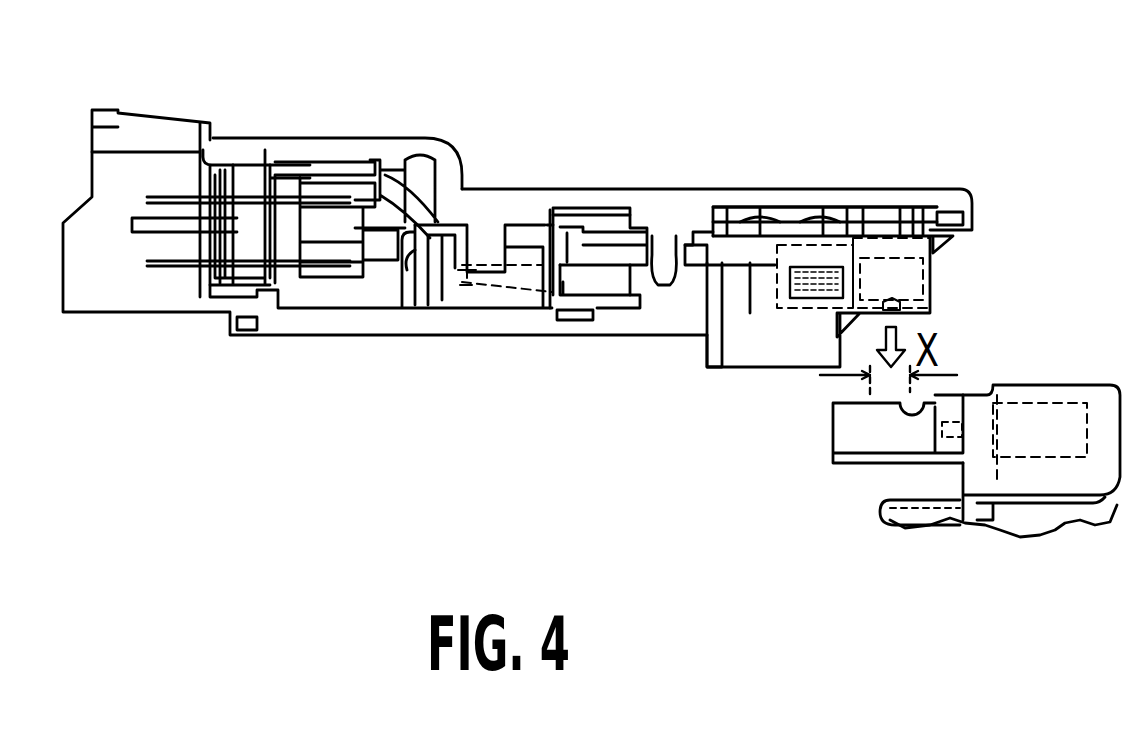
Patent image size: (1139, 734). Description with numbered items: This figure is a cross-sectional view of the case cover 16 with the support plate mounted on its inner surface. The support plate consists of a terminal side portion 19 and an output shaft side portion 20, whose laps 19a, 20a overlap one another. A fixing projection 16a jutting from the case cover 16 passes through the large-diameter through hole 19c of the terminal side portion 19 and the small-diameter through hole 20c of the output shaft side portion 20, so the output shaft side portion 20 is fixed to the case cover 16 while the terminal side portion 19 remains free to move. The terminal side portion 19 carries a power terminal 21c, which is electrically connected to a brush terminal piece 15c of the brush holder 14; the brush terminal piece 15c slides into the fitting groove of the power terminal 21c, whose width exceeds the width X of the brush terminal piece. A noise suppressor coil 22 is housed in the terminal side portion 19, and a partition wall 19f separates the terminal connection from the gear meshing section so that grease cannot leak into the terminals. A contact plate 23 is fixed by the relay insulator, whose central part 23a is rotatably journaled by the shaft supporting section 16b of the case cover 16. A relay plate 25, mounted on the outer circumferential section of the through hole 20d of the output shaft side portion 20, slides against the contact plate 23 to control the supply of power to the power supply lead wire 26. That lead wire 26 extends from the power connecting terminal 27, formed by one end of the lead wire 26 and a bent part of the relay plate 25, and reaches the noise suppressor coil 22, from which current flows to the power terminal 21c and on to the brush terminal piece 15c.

The brush holder 14 is at (1050, 398).
The brush terminal piece 15c is at (880, 442).
The case cover 16 is at (517, 207).
The fixing projection 16a is at (672, 257).
The shaft supporting section 16b is at (484, 250).
The terminal side portion 19 is at (745, 253).
The lap 19a is at (615, 237).
The through hole 19c is at (672, 262).
The partition wall 19f is at (708, 338).
The output shaft side portion 20 is at (577, 243).
The lap 20a is at (618, 253).
The through hole 20c is at (656, 262).
The through hole 20d is at (407, 270).
The power terminal 21c is at (940, 277).
The noise suppressor coil 22 is at (812, 300).
The contact plate 23 is at (572, 310).
The central part 23a is at (443, 243).
The relay plate 25 is at (467, 290).
The power supply lead wire 26 is at (422, 170).
The power connecting terminal 27 is at (178, 197).